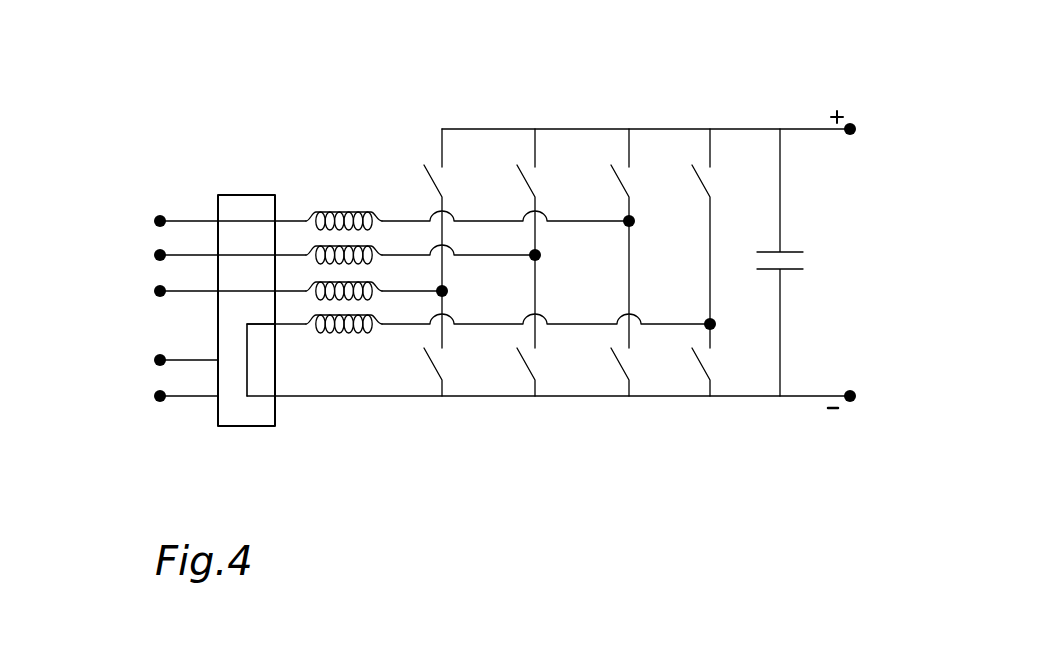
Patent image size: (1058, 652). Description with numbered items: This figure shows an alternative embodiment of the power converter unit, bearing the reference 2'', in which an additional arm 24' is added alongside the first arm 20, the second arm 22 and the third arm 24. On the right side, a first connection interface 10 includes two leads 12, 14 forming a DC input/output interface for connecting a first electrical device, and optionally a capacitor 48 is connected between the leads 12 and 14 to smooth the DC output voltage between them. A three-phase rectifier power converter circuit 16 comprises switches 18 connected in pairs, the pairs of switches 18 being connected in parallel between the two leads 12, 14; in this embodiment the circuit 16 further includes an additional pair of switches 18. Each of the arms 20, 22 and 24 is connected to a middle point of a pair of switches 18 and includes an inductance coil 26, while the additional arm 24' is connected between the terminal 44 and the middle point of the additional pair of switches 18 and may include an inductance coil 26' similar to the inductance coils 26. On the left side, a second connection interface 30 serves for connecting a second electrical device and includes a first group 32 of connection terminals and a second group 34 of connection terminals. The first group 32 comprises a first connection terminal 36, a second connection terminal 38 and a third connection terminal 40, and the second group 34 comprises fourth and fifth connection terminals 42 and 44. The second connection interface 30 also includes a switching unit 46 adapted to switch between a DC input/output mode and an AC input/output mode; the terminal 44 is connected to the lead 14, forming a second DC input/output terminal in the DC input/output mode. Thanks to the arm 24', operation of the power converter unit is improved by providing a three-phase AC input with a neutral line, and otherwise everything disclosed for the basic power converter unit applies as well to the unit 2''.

The first connection interface 10 is at (843, 213).
The lead 12 is at (858, 128).
The lead 14 is at (856, 396).
The three-phase rectifier power converter circuit 16 is at (543, 113).
The switch 18 is at (427, 185).
The first arm 20 is at (495, 220).
The second arm 22 is at (490, 257).
The third arm 24 is at (414, 334).
The additional arm 24' is at (549, 386).
The inductance coil 26 is at (344, 194).
The inductance coil 26' is at (315, 406).
The second connection interface 30 is at (64, 300).
The first group of connection terminals 32 is at (137, 243).
The second group of connection terminals 34 is at (147, 385).
The first connection terminal 36 is at (155, 221).
The second connection terminal 38 is at (155, 256).
The third connection terminal 40 is at (155, 292).
The fourth connection terminal 42 is at (160, 355).
The fifth connection terminal 44 is at (160, 402).
The switching unit 46 is at (240, 195).
The capacitor 48 is at (795, 272).
The power converter unit 2'' is at (548, 464).